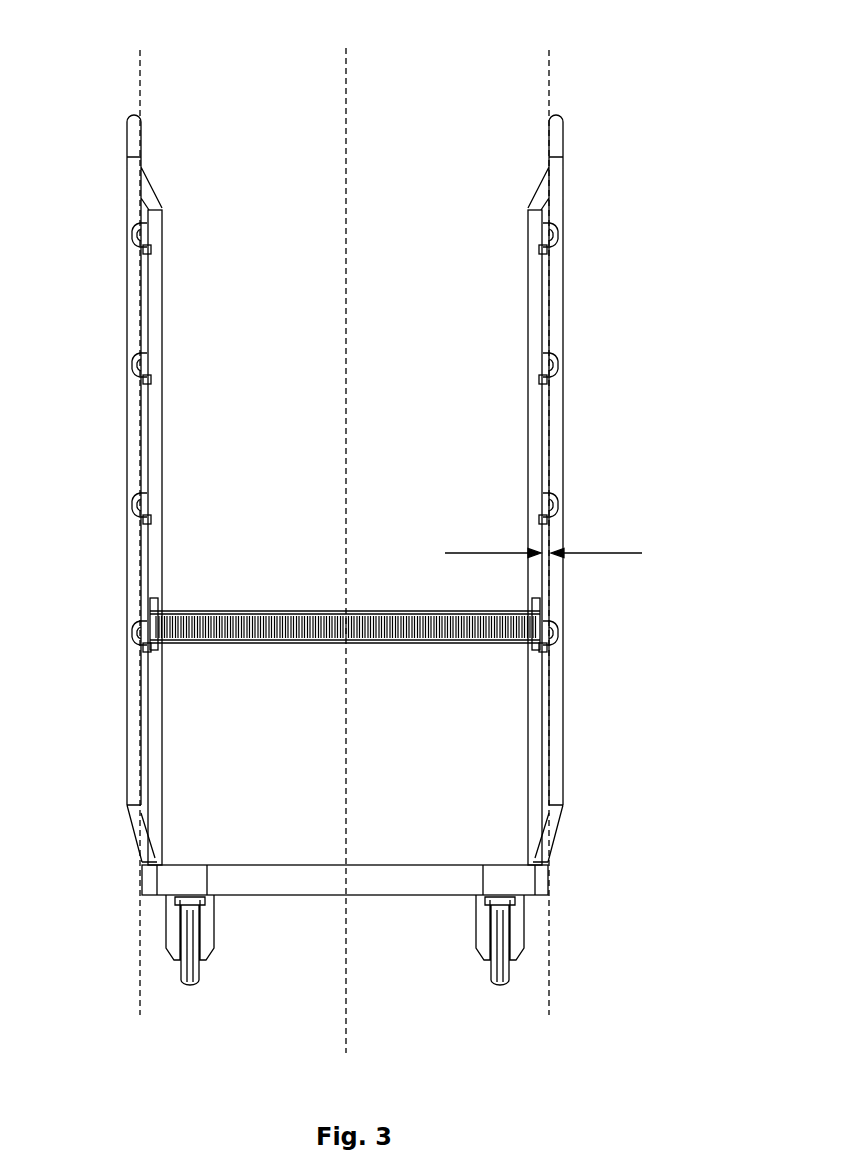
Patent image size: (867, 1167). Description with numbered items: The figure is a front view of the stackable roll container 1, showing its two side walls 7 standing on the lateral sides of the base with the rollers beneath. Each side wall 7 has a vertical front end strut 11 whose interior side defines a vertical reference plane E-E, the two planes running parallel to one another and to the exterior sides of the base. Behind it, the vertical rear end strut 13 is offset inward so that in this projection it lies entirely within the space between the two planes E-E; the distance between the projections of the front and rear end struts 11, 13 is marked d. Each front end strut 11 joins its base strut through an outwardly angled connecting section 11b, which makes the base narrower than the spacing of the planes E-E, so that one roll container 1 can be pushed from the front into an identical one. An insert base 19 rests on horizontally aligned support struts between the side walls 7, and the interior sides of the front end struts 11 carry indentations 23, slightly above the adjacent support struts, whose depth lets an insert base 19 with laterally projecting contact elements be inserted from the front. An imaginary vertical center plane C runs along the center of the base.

The stackable roll container 1 is at (353, 547).
The side wall 7 is at (345, 495).
The front end strut 11 is at (128, 430).
The connecting section 11b is at (132, 828).
The rear end strut 13 is at (162, 455).
The insert base 19 is at (358, 660).
The indentation 23 is at (132, 235).